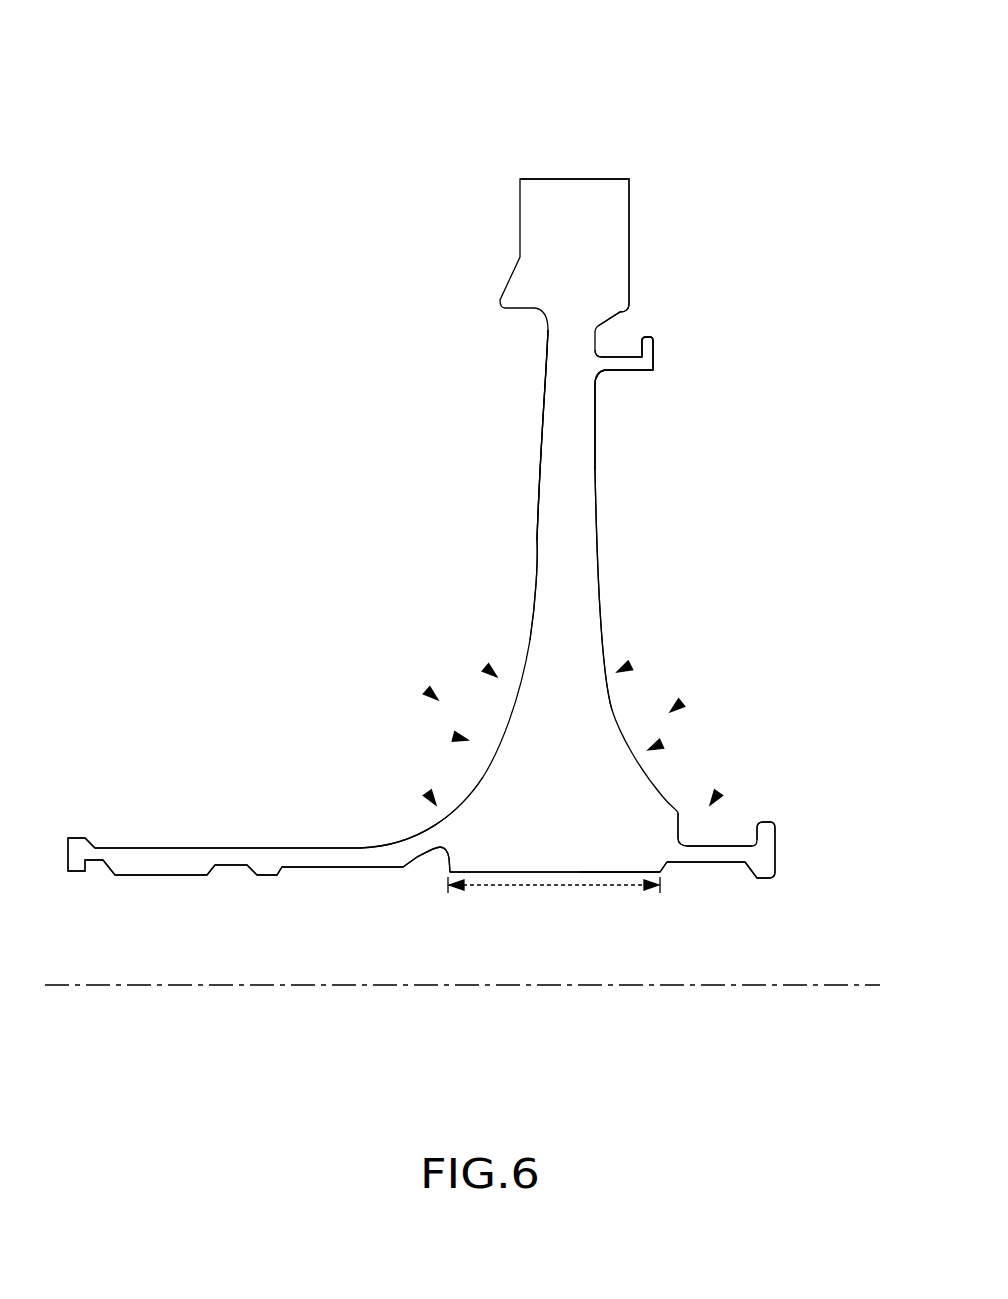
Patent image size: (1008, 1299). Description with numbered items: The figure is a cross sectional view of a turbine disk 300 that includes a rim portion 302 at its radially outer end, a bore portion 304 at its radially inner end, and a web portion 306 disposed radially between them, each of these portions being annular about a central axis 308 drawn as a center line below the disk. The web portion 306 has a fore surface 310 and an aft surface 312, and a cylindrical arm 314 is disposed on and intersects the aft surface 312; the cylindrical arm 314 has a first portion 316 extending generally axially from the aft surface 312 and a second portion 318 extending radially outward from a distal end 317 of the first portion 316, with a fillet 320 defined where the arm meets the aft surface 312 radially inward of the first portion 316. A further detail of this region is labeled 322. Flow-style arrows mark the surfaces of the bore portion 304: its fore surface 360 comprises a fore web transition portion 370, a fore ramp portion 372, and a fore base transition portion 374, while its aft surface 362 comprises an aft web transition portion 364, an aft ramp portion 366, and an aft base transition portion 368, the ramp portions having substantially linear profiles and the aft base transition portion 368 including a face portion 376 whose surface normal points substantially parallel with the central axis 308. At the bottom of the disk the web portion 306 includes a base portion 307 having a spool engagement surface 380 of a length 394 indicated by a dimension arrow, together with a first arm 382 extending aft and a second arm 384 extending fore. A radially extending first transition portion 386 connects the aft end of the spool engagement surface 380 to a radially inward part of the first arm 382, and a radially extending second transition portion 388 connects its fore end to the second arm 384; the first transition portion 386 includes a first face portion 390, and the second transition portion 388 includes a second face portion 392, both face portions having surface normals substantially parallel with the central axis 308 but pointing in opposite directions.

The turbine disk 300 is at (266, 74).
The rim portion 302 is at (365, 240).
The bore portion 304 is at (368, 772).
The web portion 306 is at (366, 503).
The base portion 307 is at (489, 908).
The central axis 308 is at (768, 985).
The fore surface 310 is at (535, 565).
The aft surface 312 is at (598, 576).
The cylindrical arm 314 is at (694, 384).
The first portion 316 is at (650, 377).
The distal end 317 is at (648, 372).
The second portion 318 is at (655, 345).
The fillet 320 is at (624, 398).
The neck surface 322 is at (615, 420).
The fore surface 360 is at (427, 692).
The aft surface 362 is at (680, 706).
The aft web transition portion 364 is at (630, 664).
The aft ramp portion 366 is at (663, 747).
The aft base transition portion 368 is at (718, 795).
The fore web transition portion 370 is at (487, 669).
The fore ramp portion 372 is at (455, 738).
The fore base transition portion 374 is at (428, 795).
The face portion 376 is at (680, 828).
The spool engagement surface 380 is at (543, 880).
The first arm 382 is at (722, 853).
The second arm 384 is at (338, 857).
The first transition portion 386 is at (677, 866).
The second transition portion 388 is at (442, 856).
The first face portion 390 is at (667, 867).
The second face portion 392 is at (423, 860).
The length 394 is at (613, 880).